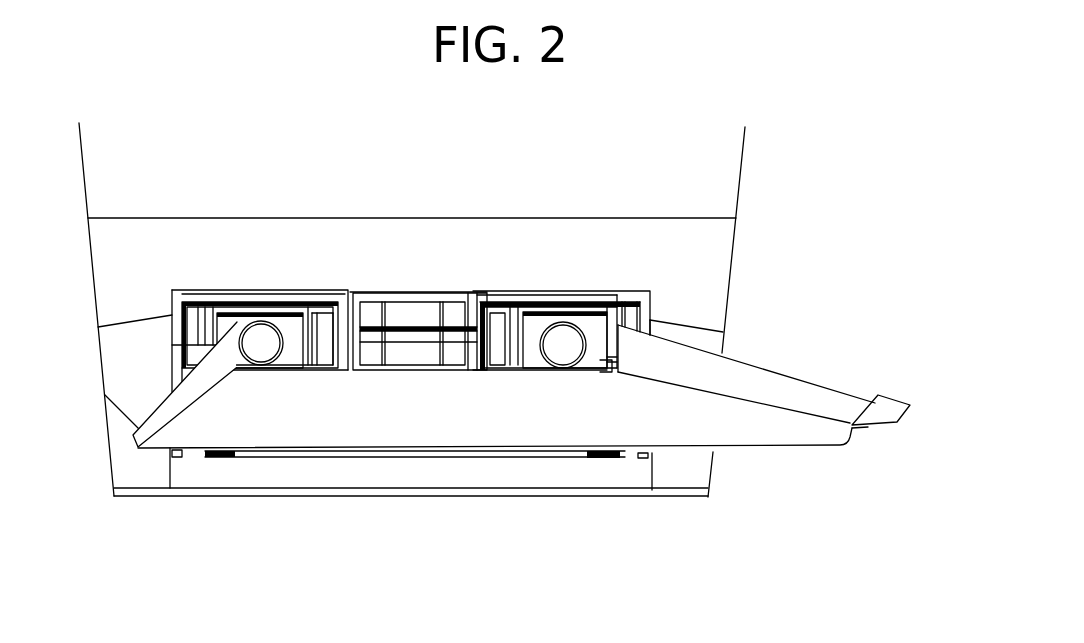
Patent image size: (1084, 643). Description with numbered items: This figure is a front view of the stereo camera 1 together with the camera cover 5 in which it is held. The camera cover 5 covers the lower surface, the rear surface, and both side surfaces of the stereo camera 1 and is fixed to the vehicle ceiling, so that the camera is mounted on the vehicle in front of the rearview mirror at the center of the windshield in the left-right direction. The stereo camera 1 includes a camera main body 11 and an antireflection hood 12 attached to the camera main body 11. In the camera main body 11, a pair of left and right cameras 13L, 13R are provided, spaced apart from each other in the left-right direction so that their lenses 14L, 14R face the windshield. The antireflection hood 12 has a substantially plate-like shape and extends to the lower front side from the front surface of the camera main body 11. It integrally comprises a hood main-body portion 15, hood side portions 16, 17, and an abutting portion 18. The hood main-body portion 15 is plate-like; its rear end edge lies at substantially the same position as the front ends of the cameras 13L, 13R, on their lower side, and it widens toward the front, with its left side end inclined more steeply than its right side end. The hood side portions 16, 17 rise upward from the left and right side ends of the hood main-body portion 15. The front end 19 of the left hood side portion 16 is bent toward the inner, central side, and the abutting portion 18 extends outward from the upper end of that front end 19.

The stereo camera 1 is at (412, 289).
The camera cover 5 is at (733, 263).
The camera main body 11 is at (369, 292).
The antireflection hood 12 is at (738, 449).
The right camera 13R is at (287, 362).
The left camera 13L is at (530, 363).
The lens of right camera 14R is at (258, 343).
The lens of left camera 14L is at (565, 340).
The hood main-body portion 15 is at (422, 435).
The left hood side portion 16 is at (703, 370).
The right hood side portion 17 is at (187, 397).
The abutting portion 18 is at (892, 407).
The front end of hood side portion 19 is at (862, 432).